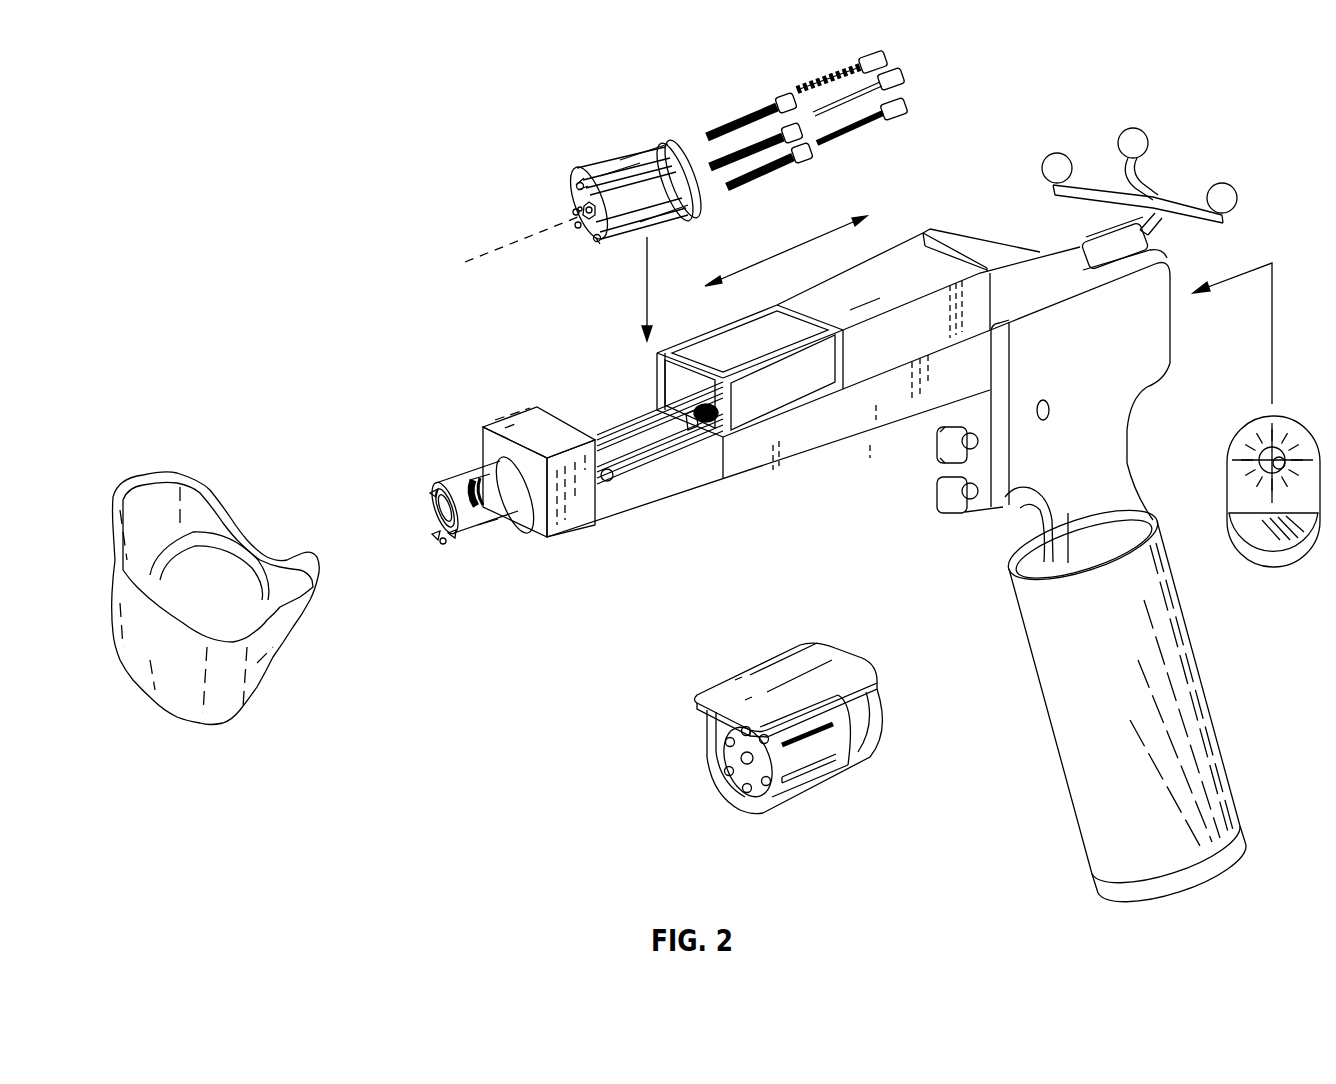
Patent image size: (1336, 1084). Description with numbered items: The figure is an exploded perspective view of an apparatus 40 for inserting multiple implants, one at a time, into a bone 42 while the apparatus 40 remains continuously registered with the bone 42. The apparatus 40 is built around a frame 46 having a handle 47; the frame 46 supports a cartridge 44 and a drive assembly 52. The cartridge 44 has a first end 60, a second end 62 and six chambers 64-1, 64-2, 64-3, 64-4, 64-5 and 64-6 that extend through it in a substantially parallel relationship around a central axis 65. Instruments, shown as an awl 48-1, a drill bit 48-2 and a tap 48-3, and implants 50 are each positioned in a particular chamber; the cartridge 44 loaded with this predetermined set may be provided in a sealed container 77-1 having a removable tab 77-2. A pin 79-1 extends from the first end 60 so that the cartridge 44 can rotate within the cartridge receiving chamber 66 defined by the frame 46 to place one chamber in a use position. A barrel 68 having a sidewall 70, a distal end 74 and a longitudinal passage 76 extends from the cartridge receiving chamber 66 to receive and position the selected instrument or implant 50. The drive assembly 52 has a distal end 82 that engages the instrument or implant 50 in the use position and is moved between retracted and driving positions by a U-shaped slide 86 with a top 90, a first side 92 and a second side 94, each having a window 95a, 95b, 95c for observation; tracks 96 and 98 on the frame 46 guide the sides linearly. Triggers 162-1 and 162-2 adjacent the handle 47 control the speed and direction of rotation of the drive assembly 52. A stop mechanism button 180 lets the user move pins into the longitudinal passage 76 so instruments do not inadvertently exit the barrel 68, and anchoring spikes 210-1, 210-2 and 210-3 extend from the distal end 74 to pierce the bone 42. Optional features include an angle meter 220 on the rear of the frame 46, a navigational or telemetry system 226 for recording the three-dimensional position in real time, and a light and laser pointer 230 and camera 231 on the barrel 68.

The apparatus 40 is at (1237, 80).
The bone 42 is at (130, 480).
The cartridge 44 is at (668, 133).
The frame 46 is at (803, 480).
The handle 47 is at (1207, 700).
The awl 48-1 is at (913, 83).
The drill bit 48-2 is at (828, 74).
The tap 48-3 is at (913, 113).
The implant 50 is at (777, 97).
The drive assembly 52 is at (708, 423).
The first end 60 is at (579, 181).
The second end 62 is at (700, 194).
The chamber 64-1 is at (580, 229).
The chamber 64-2 is at (599, 242).
The chamber 64-3 is at (658, 214).
The chamber 64-4 is at (652, 168).
The chamber 64-5 is at (603, 180).
The chamber 64-6 is at (577, 192).
The central axis 65 is at (486, 262).
The cartridge receiving chamber 66 is at (647, 440).
The barrel 68 is at (497, 497).
The sidewall 70 is at (505, 503).
The distal end 74 is at (430, 505).
The longitudinal passage 76 is at (430, 513).
The sealed container 77-1 is at (807, 787).
The removable tab 77-2 is at (873, 673).
The pin 79-1 is at (577, 208).
The distal end 82 is at (690, 428).
The slide 86 is at (907, 247).
The top 90 is at (849, 317).
The first side 92 is at (657, 350).
The second side 94 is at (1020, 293).
The window 95a is at (707, 340).
The window 95b is at (660, 378).
The window 95c is at (824, 392).
The track 96 is at (603, 437).
The track 98 is at (608, 482).
The trigger 162-1 is at (943, 453).
The trigger 162-2 is at (943, 513).
The stop mechanism button 180 is at (484, 490).
The anchoring spike 210-1 is at (430, 500).
The anchoring spike 210-2 is at (450, 537).
The anchoring spike 210-3 is at (432, 537).
The angle meter 220 is at (1257, 423).
The navigational or telemetry system 226 is at (1144, 130).
The light and laser pointer 230 is at (440, 488).
The camera 231 is at (443, 544).